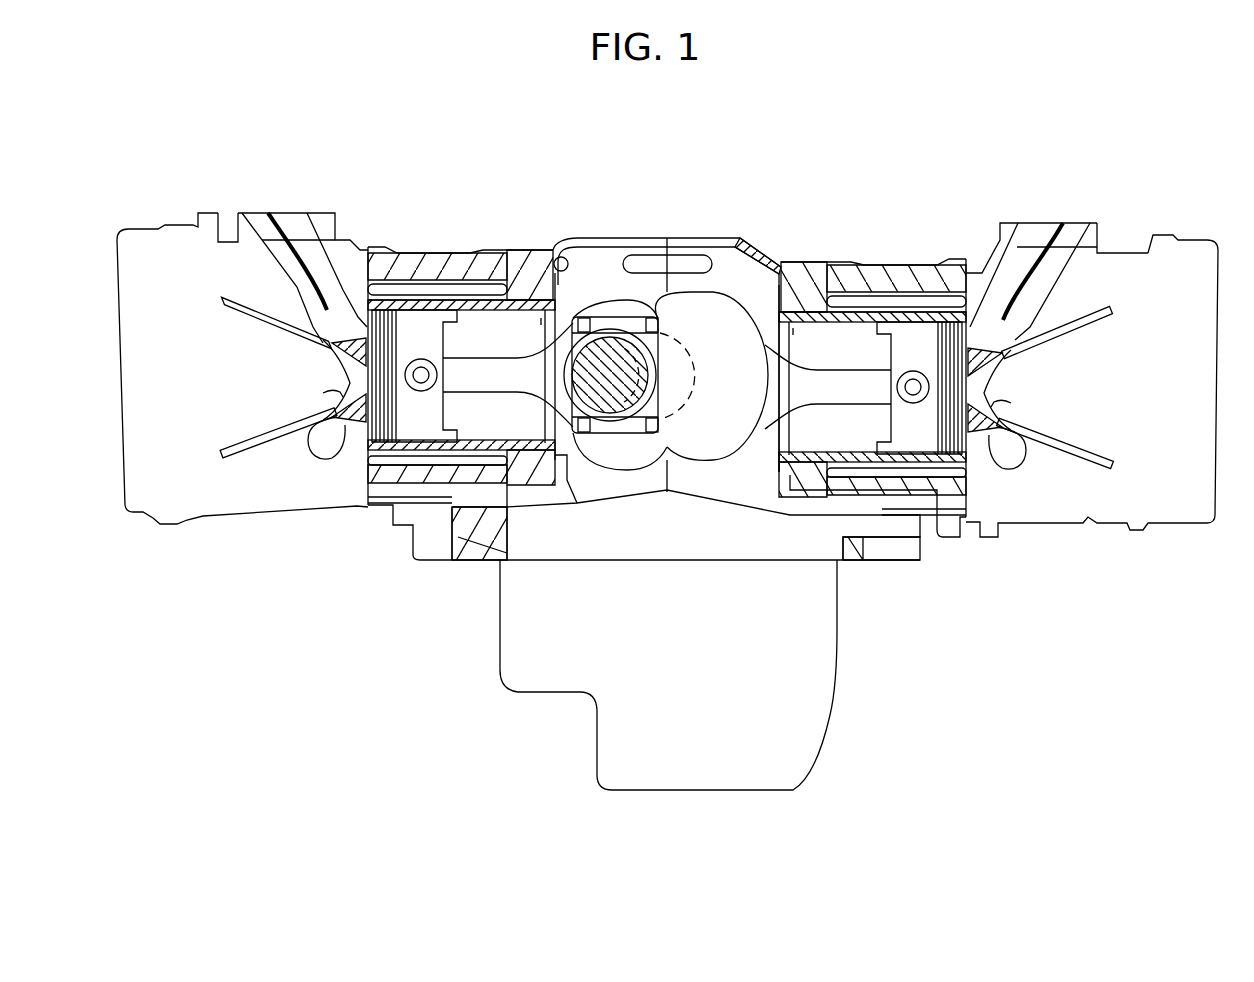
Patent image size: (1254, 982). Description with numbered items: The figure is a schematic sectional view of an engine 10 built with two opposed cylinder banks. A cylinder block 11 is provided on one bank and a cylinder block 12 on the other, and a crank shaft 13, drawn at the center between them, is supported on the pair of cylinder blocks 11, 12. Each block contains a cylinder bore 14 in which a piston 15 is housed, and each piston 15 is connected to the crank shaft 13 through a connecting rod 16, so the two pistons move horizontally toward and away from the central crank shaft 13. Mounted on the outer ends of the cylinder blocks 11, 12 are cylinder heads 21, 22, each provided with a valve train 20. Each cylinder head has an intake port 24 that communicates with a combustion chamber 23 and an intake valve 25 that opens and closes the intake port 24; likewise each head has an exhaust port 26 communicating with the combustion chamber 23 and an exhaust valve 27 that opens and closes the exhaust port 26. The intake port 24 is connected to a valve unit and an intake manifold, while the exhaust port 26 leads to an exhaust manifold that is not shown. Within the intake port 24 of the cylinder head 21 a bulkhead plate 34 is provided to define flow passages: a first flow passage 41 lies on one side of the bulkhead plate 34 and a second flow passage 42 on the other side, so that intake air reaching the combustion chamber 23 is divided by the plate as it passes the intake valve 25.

The engine 10 is at (203, 79).
The cylinder block 11 is at (888, 258).
The cylinder block 12 is at (466, 246).
The crank shaft 13 is at (698, 471).
The cylinder bore 14 is at (541, 318).
The piston 15 is at (433, 410).
The connecting rod 16 is at (489, 372).
The valve train 20 is at (220, 348).
The cylinder head 21 is at (1109, 218).
The cylinder head 22 is at (232, 203).
The combustion chamber 23 is at (362, 356).
The intake port 24 is at (261, 202).
The intake valve 25 is at (270, 329).
The exhaust port 26 is at (323, 453).
The exhaust valve 27 is at (243, 437).
The bulkhead plate 34 is at (287, 227).
The first flow passage 41 is at (297, 273).
The second flow passage 42 is at (315, 258).